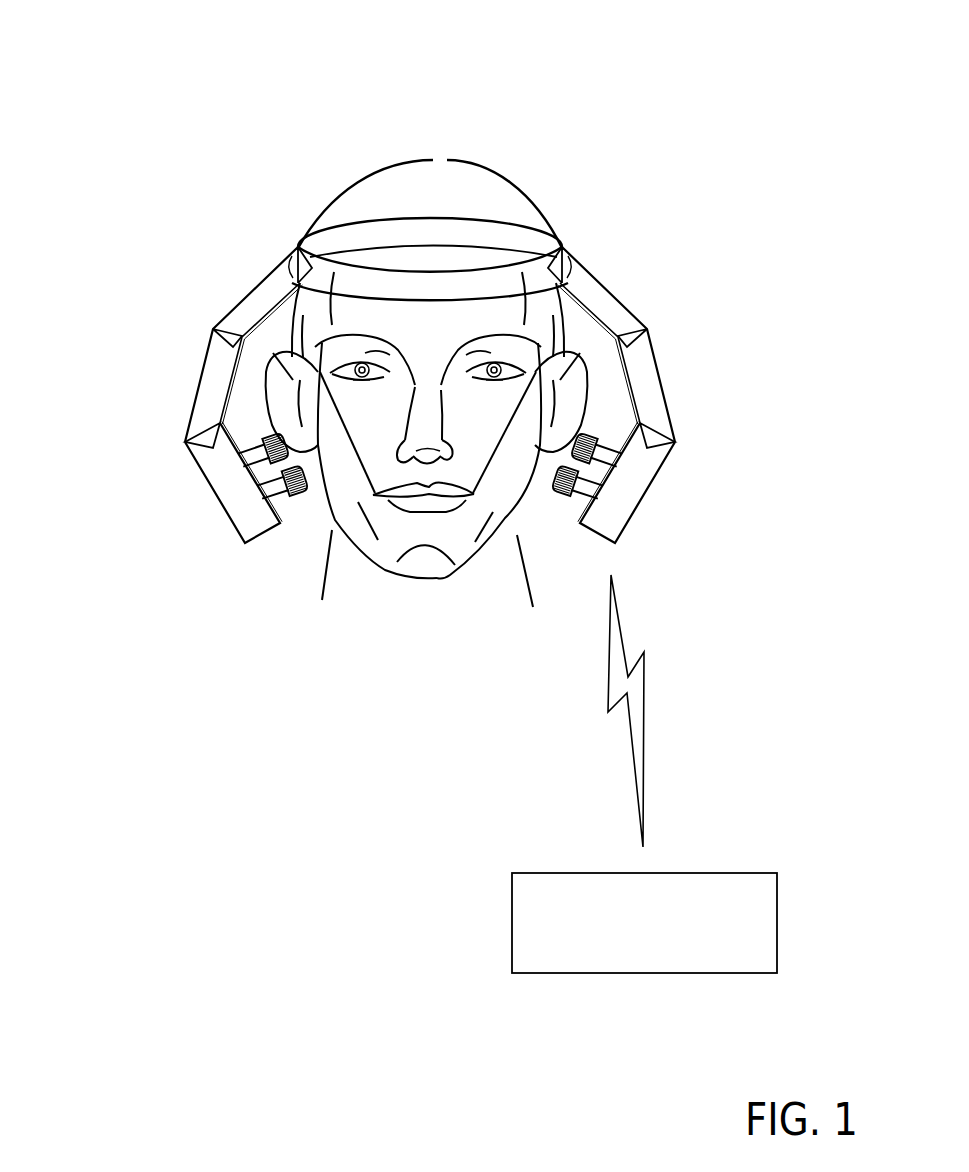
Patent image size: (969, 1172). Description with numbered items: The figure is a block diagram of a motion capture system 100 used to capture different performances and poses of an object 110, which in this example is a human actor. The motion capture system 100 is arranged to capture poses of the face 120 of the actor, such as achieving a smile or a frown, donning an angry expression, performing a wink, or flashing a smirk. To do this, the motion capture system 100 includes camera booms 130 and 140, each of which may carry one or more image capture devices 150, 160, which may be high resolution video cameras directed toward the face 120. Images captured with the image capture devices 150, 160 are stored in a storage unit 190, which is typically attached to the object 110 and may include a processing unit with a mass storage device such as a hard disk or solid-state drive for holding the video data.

The motion capture system 100 is at (427, 106).
The object 110 is at (480, 187).
The face 120 is at (606, 261).
The camera boom 130 is at (210, 330).
The camera boom 140 is at (648, 332).
The image capture device 150 is at (657, 528).
The image capture device 160 is at (182, 518).
The storage unit 190 is at (512, 907).